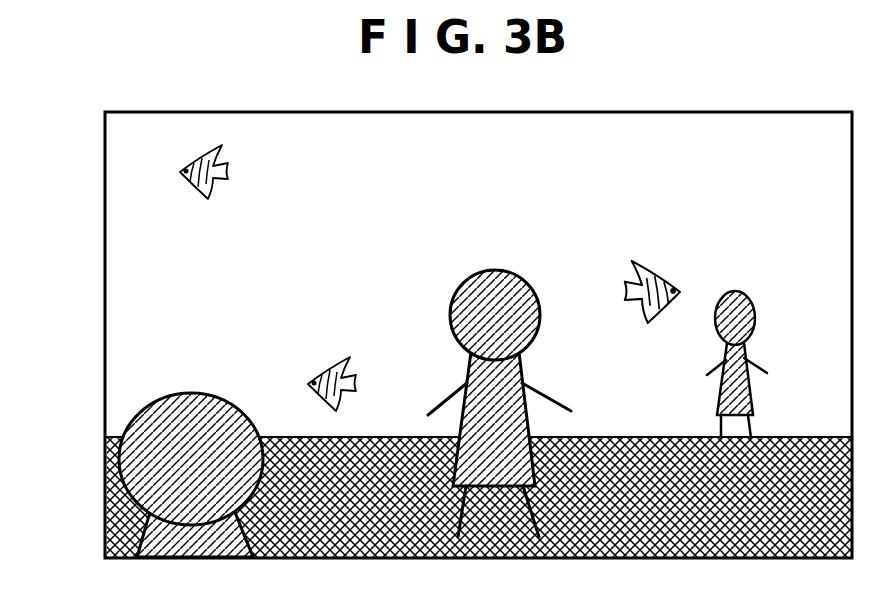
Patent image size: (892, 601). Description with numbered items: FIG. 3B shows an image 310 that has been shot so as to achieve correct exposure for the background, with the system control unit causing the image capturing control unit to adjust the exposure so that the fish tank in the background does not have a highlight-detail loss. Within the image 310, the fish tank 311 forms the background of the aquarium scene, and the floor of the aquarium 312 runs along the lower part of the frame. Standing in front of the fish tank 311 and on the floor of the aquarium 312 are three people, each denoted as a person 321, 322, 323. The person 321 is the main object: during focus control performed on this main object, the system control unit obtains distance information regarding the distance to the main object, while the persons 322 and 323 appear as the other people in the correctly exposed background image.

The image 310 is at (105, 165).
The fish tank 311 is at (132, 240).
The floor of the aquarium 312 is at (121, 497).
The person 321 is at (477, 271).
The person 322 is at (205, 393).
The person 323 is at (735, 292).